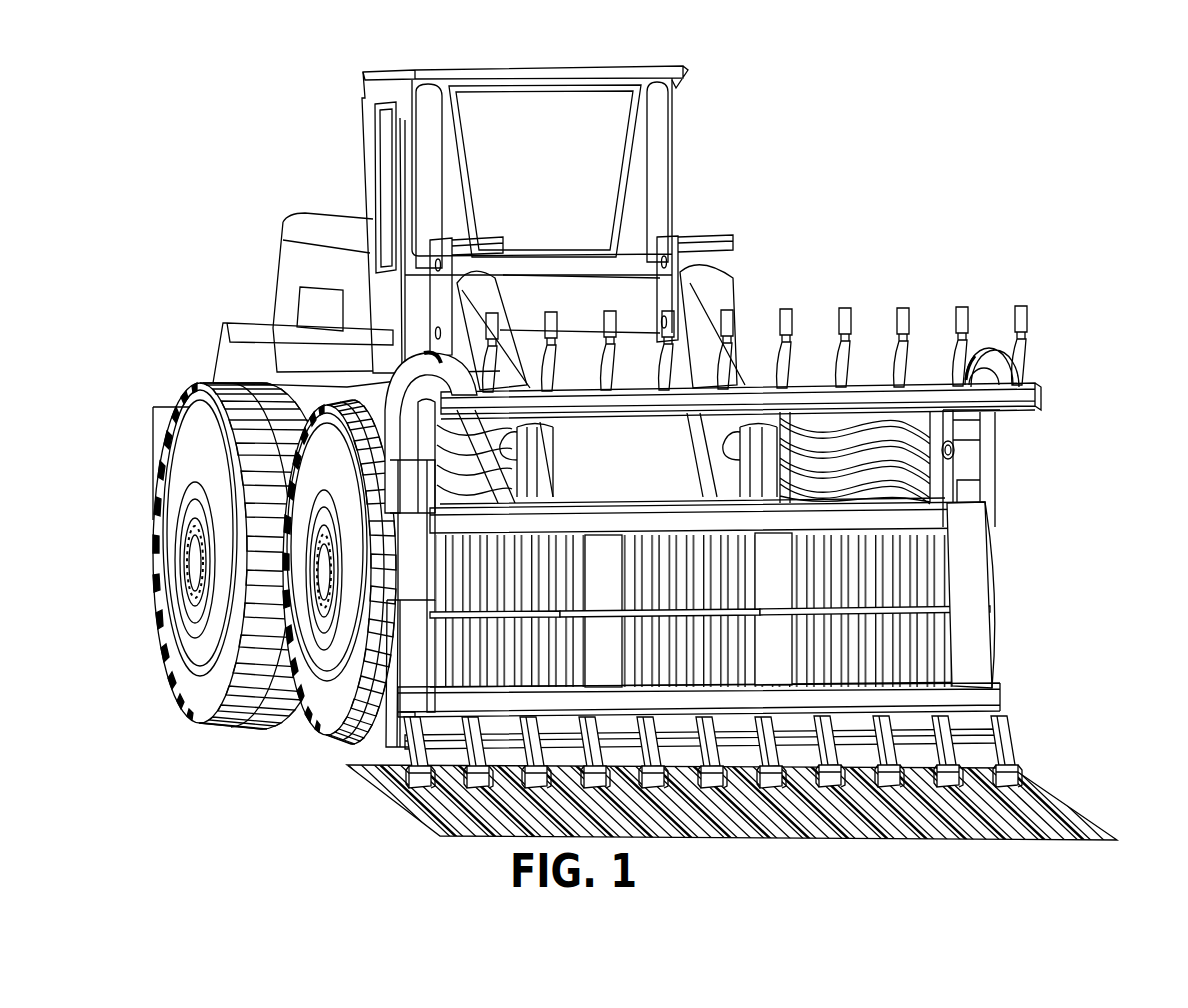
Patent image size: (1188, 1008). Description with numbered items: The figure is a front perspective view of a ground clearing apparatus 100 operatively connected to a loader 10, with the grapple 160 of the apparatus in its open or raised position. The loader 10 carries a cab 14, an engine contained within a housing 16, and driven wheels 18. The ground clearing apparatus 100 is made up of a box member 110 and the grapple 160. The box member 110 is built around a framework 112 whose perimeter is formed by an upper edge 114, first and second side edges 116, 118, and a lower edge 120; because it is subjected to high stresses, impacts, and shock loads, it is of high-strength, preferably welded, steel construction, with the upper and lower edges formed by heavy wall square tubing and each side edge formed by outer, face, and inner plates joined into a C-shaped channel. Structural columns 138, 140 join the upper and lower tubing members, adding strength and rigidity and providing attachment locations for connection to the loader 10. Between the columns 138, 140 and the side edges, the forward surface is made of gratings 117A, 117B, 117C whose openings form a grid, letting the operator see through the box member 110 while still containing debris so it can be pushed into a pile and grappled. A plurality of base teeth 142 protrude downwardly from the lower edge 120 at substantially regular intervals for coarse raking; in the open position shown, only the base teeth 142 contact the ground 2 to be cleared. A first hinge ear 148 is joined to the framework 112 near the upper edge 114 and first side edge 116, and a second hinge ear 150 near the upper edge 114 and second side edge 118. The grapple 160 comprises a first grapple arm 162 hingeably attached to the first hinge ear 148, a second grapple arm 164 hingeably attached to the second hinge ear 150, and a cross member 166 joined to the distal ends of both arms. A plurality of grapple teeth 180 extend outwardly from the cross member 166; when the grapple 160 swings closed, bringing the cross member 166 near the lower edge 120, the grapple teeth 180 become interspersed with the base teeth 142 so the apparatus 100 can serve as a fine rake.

The ground 2 is at (1058, 818).
The loader 10 is at (428, 408).
The cab 14 is at (515, 65).
The housing 16 is at (308, 213).
The driven wheels 18 is at (185, 400).
The ground clearing apparatus 100 is at (689, 548).
The box member 110 is at (747, 660).
The framework 112 is at (975, 638).
The upper edge 114 is at (915, 521).
The first side edge 116 is at (397, 663).
The grating 117A is at (480, 614).
The grating 117B is at (660, 612).
The grating 117C is at (897, 609).
The second side edge 118 is at (990, 552).
The lower edge 120 is at (735, 738).
The structural column 138 is at (605, 573).
The structural column 140 is at (773, 553).
The base teeth 142 is at (1005, 747).
The first hinge ear 148 is at (404, 520).
The second hinge ear 150 is at (993, 434).
The grapple 160 is at (677, 367).
The first grapple arm 162 is at (430, 362).
The second grapple arm 164 is at (978, 357).
The cross member 166 is at (931, 392).
The grapple teeth 180 is at (897, 320).